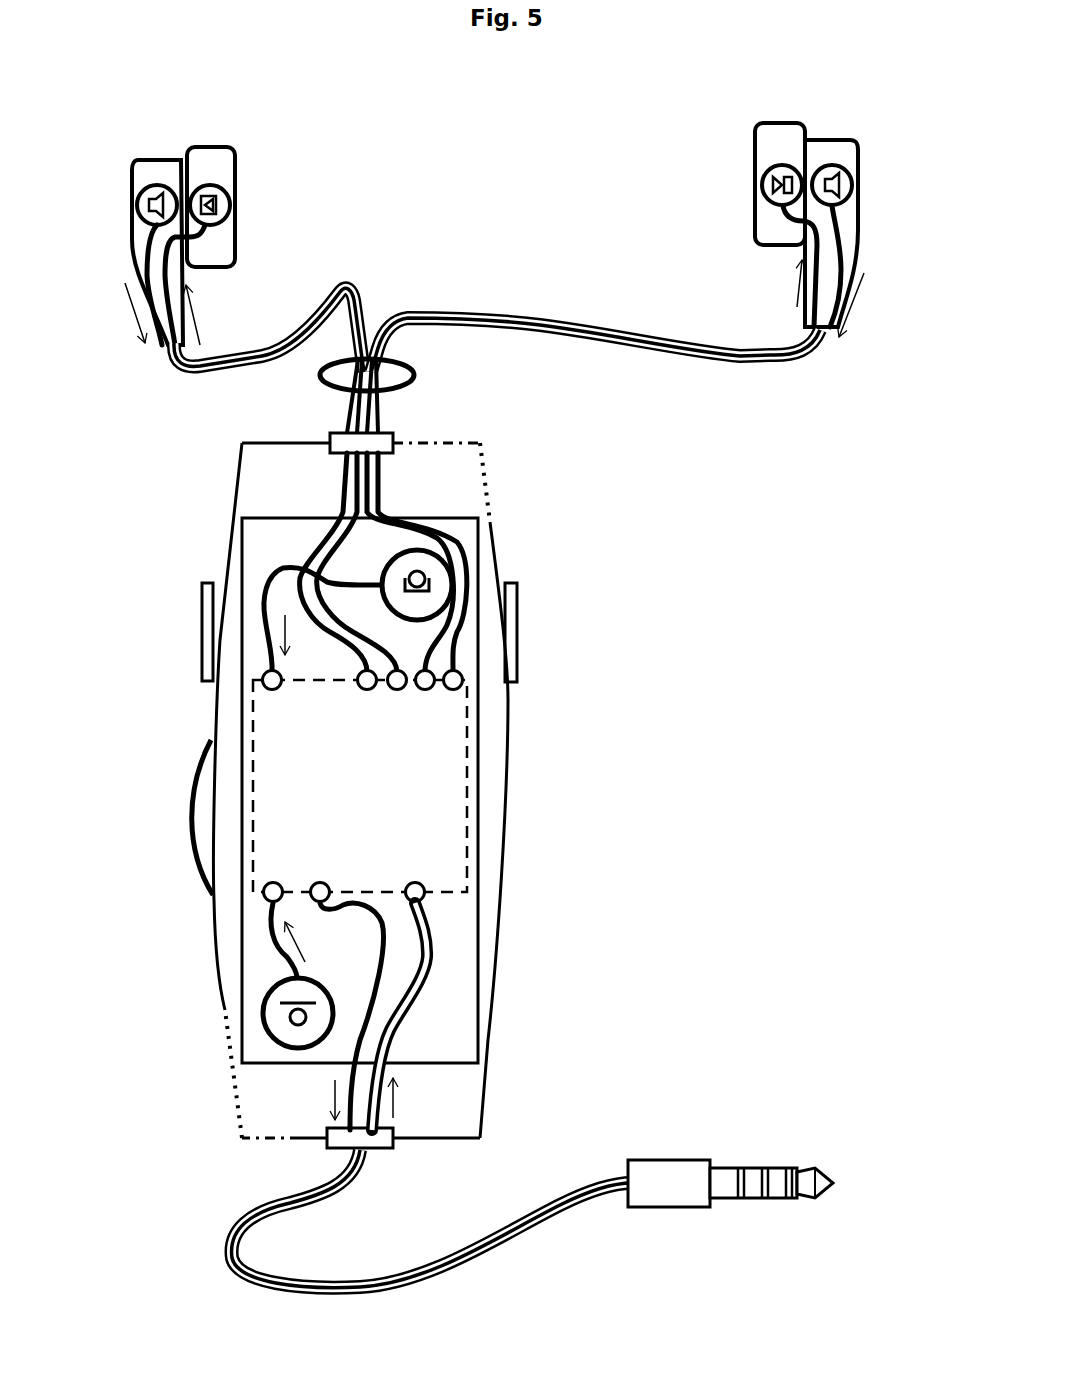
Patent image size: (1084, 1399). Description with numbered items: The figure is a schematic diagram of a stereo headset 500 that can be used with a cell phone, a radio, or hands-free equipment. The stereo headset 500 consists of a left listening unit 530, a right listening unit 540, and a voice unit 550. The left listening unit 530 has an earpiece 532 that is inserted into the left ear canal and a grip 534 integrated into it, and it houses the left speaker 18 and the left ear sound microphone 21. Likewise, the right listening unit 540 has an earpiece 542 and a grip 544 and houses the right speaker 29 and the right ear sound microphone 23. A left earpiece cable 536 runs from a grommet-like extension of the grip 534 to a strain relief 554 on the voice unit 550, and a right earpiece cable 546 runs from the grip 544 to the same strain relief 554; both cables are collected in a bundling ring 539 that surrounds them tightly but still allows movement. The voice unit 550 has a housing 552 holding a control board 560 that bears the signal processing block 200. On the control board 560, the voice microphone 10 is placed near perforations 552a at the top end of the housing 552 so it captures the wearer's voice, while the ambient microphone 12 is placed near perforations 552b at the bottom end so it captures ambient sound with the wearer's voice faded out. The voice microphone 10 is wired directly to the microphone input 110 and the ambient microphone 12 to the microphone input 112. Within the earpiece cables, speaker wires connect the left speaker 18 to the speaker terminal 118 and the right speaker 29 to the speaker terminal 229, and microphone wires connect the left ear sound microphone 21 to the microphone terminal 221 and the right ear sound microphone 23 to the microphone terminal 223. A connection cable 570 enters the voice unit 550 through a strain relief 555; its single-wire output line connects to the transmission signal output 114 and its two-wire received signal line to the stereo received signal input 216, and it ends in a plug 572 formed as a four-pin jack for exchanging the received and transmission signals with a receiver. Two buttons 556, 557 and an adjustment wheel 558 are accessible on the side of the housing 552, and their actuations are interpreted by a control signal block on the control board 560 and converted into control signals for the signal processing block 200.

The stereo headset 500 is at (840, 608).
The left listening unit 530 is at (198, 107).
The grip 534 is at (157, 158).
The earpiece 532 is at (236, 264).
The left ear sound microphone 21 is at (157, 183).
The left speaker 18 is at (213, 183).
The left earpiece cable 536 is at (343, 288).
The right listening unit 540 is at (800, 108).
The grip 544 is at (835, 140).
The earpiece 542 is at (755, 242).
The right speaker 29 is at (780, 165).
The right ear sound microphone 23 is at (835, 165).
The right earpiece cable 546 is at (740, 362).
The bundling ring 539 is at (415, 380).
The strain relief 554 is at (330, 436).
The voice unit 550 is at (705, 915).
The housing 552 is at (485, 1085).
The perforation 552a is at (490, 486).
The perforation 552b is at (224, 1054).
The button 556 is at (518, 612).
The button 557 is at (202, 600).
The adjustment wheel 558 is at (195, 768).
The control board 560 is at (490, 948).
The voice microphone 10 is at (393, 562).
The signal processing block 200 is at (385, 803).
The microphone input 110 is at (275, 692).
The speaker terminal 118 is at (372, 692).
The microphone terminal 221 is at (400, 692).
The speaker terminal 229 is at (432, 692).
The microphone terminal 223 is at (460, 690).
The microphone input 112 is at (270, 884).
The transmission signal output 114 is at (325, 885).
The received signal input 216 is at (425, 882).
The ambient microphone 12 is at (262, 1010).
The strain relief 555 is at (328, 1152).
The connection cable 570 is at (498, 1258).
The plug 572 is at (705, 1160).